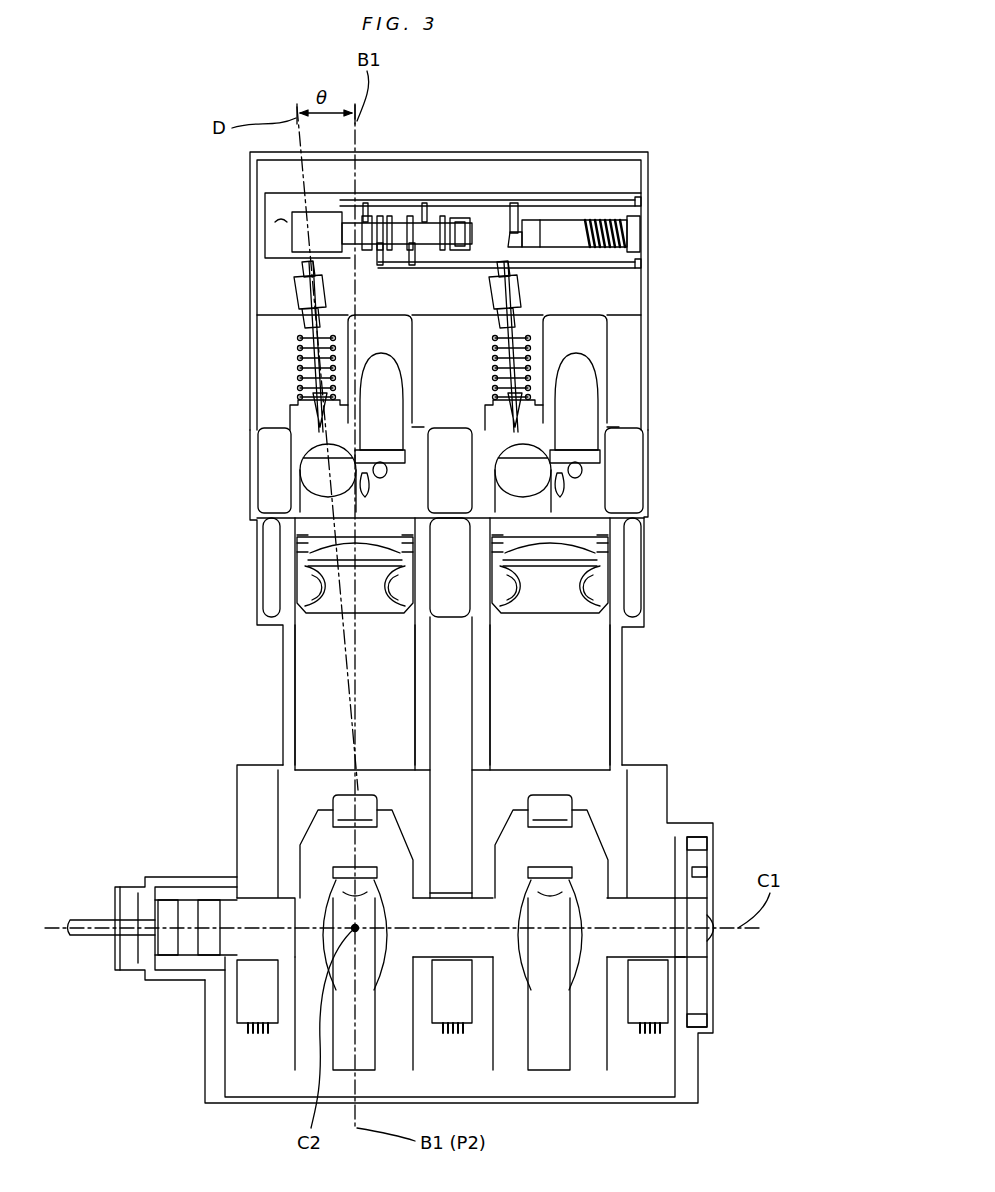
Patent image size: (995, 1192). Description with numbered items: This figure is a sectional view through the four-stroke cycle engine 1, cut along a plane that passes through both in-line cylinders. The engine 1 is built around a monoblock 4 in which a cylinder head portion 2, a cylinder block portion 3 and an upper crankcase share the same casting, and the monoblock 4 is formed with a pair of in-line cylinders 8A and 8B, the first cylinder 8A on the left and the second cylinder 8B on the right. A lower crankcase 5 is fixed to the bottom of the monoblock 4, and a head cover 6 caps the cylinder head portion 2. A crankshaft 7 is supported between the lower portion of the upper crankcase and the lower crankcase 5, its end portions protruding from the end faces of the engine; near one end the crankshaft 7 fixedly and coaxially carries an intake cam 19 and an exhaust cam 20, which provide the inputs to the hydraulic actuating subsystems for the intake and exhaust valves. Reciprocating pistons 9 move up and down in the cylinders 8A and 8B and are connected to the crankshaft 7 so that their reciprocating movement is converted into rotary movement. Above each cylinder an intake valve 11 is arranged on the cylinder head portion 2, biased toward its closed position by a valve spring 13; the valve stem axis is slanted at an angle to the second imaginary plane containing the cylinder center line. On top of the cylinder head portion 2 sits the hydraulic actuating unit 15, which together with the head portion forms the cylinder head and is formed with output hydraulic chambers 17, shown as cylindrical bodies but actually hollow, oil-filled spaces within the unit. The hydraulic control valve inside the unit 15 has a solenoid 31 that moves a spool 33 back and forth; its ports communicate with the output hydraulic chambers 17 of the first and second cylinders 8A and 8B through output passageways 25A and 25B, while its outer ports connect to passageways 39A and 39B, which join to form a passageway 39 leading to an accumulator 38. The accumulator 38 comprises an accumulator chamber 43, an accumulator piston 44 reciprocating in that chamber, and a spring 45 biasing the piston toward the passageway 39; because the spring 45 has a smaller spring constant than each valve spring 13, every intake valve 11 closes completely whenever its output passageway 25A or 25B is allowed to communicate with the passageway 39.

The engine 1 is at (620, 128).
The cylinder head portion 2 is at (651, 468).
The cylinder block portion 3 is at (646, 565).
The monoblock 4 is at (732, 468).
The lower crankcase 5 is at (690, 1060).
The head cover 6 is at (505, 165).
The crankshaft 7 is at (190, 948).
The first cylinder 8A is at (330, 683).
The second cylinder 8B is at (570, 683).
The piston 9 is at (300, 585).
The intake valve 11 is at (300, 322).
The valve spring 13 is at (298, 365).
The hydraulic actuating unit 15 is at (414, 188).
The output hydraulic chamber 17 is at (303, 282).
The intake cam 19 is at (167, 900).
The exhaust cam 20 is at (207, 898).
The output passageway 25A is at (295, 295).
The output passageway 25B is at (448, 262).
The solenoid 31 is at (322, 218).
The spool 33 is at (462, 218).
The accumulator 38 is at (598, 210).
The passageway 39 is at (518, 228).
The passageway 39A is at (370, 205).
The passageway 39B is at (425, 205).
The accumulator chamber 43 is at (560, 265).
The accumulator piston 44 is at (540, 232).
The spring 45 is at (632, 235).